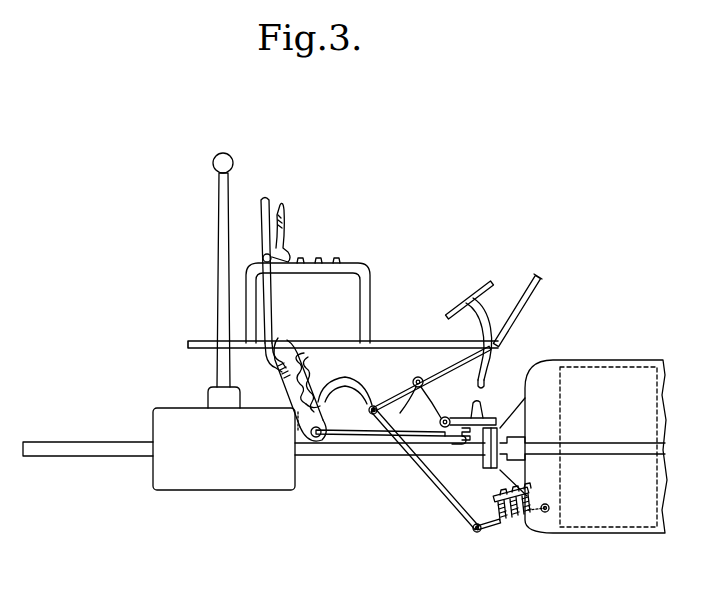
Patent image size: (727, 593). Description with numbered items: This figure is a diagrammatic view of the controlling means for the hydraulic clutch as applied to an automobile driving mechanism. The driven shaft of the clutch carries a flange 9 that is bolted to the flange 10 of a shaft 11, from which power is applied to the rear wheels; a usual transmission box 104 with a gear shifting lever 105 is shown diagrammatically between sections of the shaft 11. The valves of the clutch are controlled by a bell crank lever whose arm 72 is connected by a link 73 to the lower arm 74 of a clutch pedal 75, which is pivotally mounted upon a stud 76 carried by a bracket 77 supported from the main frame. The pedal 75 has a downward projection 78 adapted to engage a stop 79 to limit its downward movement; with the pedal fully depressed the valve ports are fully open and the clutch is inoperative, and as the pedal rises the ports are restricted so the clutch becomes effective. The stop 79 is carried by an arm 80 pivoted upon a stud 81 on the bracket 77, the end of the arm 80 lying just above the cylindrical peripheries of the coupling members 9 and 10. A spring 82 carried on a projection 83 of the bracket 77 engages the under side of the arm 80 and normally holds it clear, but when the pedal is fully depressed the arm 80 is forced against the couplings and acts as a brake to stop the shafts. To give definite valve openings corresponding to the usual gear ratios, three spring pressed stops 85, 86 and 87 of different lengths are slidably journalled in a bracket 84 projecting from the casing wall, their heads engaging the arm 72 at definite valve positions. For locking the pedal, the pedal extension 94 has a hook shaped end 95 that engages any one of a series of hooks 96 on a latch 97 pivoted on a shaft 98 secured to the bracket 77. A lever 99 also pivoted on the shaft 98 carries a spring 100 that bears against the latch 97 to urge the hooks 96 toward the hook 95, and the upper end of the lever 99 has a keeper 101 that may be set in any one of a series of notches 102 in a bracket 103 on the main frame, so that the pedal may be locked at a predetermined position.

The flange 9 is at (491, 468).
The flange 10 is at (485, 462).
The shaft 11 is at (368, 450).
The arm of bell crank lever 72 is at (478, 532).
The link 73 is at (434, 490).
The lower arm of clutch pedal 74 is at (380, 398).
The clutch pedal 75 is at (470, 300).
The stud 76 is at (418, 377).
The bracket 77 is at (435, 406).
The downward projection 78 is at (484, 383).
The stop 79 is at (481, 402).
The arm 80 is at (486, 419).
The stud 81 is at (440, 421).
The spring 82 is at (472, 444).
The projection 83 is at (452, 440).
The bracket 84 is at (494, 499).
The spring pressed stop 85 is at (527, 517).
The spring pressed stop 86 is at (513, 519).
The spring pressed stop 87 is at (500, 521).
The pedal extension 94 is at (344, 385).
The hook shaped end 95 is at (360, 408).
The hooks 96 is at (309, 364).
The latch 97 is at (309, 396).
The shaft 98 is at (316, 437).
The lever 99 is at (283, 392).
The spring 100 is at (272, 363).
The keeper 101 is at (284, 250).
The notches 102 is at (336, 258).
The bracket 103 is at (363, 268).
The box 104 is at (246, 490).
The lever 105 is at (220, 205).